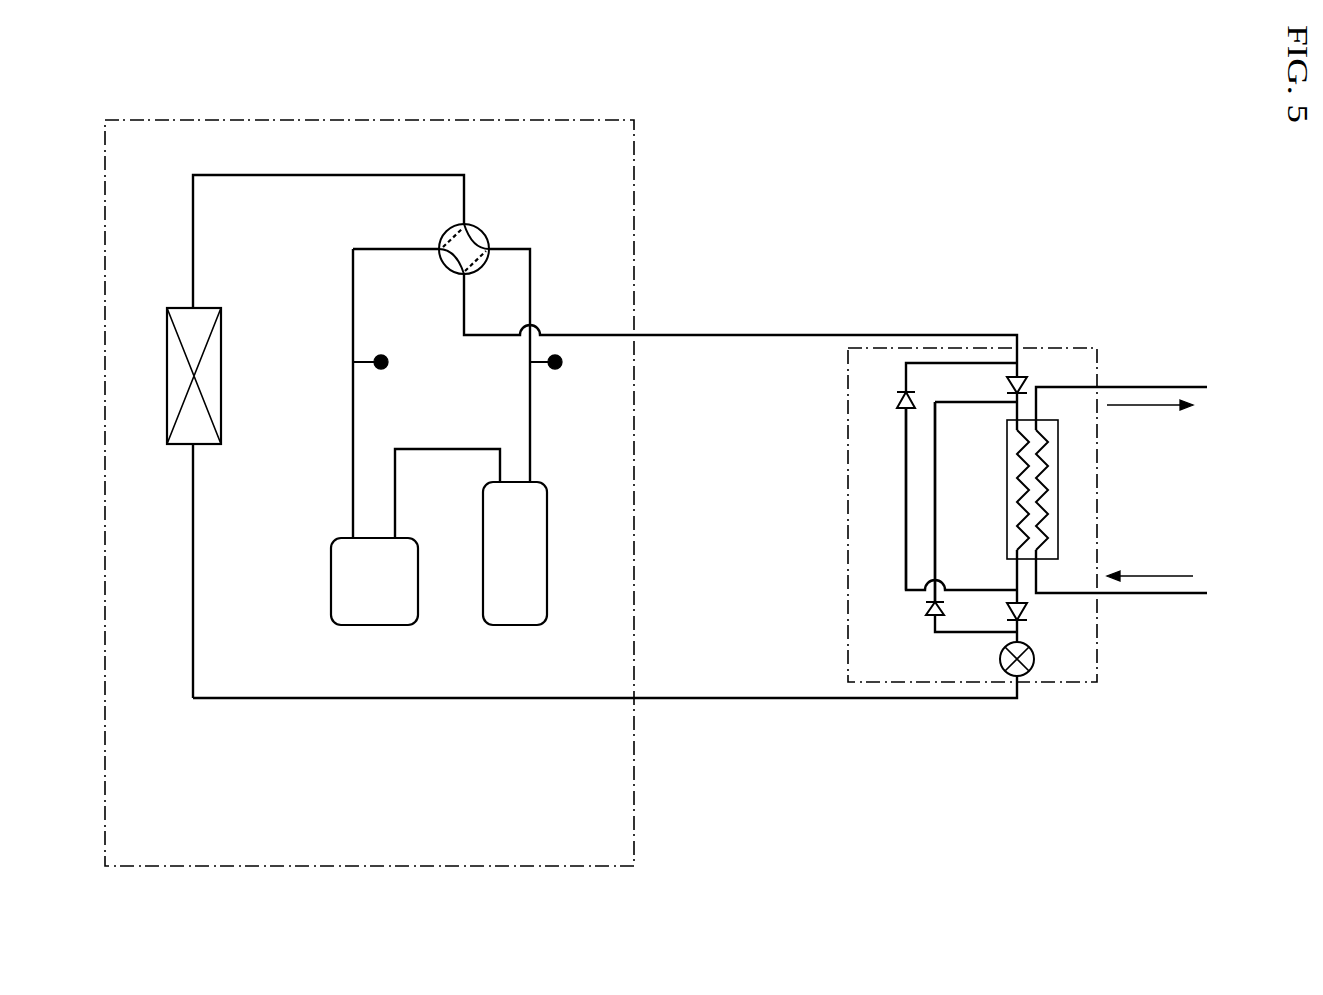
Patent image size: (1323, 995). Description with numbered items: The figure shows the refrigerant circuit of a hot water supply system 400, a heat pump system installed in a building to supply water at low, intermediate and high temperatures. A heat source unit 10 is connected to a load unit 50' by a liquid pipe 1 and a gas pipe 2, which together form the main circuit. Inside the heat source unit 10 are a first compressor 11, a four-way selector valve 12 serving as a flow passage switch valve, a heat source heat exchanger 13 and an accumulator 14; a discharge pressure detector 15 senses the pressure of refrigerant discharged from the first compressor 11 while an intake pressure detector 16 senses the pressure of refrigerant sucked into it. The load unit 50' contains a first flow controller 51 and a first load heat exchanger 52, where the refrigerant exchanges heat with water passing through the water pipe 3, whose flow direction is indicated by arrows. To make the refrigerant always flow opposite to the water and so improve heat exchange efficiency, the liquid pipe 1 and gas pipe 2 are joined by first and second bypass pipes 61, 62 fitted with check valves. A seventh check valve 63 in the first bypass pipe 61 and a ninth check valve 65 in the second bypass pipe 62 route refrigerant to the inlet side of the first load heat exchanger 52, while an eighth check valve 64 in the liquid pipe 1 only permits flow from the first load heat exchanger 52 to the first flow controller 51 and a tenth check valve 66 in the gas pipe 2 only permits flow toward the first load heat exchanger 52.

The liquid pipe 1 is at (680, 698).
The gas pipe 2 is at (690, 334).
The water pipe 3 is at (1148, 386).
The heat source unit 10 is at (635, 200).
The first compressor 11 is at (512, 625).
The four-way selector valve 12 is at (478, 228).
The heat source heat exchanger 13 is at (222, 372).
The accumulator 14 is at (372, 625).
The discharge pressure detector 15 is at (562, 362).
The intake pressure detector 16 is at (388, 362).
The load unit 50' is at (972, 478).
The first flow controller 51 is at (1000, 660).
The first load heat exchanger 52 is at (1058, 477).
The first bypass pipe 61 is at (935, 522).
The second bypass pipe 62 is at (906, 472).
The seventh check valve 63 is at (926, 608).
The eighth check valve 64 is at (1027, 608).
The ninth check valve 65 is at (897, 400).
The tenth check valve 66 is at (1030, 383).
The hot water supply system 400 is at (865, 218).